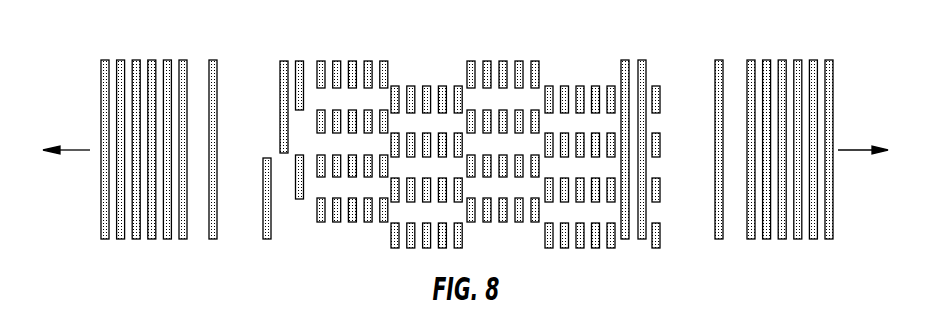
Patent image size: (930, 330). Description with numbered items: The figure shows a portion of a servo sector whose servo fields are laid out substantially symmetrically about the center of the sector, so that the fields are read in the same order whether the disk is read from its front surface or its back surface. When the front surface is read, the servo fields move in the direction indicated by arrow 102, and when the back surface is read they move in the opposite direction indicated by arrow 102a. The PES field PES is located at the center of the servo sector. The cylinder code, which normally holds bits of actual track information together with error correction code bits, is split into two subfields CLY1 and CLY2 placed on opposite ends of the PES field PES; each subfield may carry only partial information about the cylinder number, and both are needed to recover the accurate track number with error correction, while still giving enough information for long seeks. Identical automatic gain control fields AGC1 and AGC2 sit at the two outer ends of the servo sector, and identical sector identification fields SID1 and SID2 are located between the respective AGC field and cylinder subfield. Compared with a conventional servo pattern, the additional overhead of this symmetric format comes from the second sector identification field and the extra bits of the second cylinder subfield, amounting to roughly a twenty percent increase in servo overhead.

The arrow 102 is at (90, 150).
The arrow 102a is at (843, 150).
The first AGC field AGC1 is at (101, 55).
The first SID field SID1 is at (198, 55).
The first CYL subfield CLY1 is at (240, 55).
The PES field PES is at (313, 55).
The second CYL subfield CLY2 is at (665, 55).
The second SID field SID2 is at (702, 55).
The second AGC field AGC2 is at (834, 55).